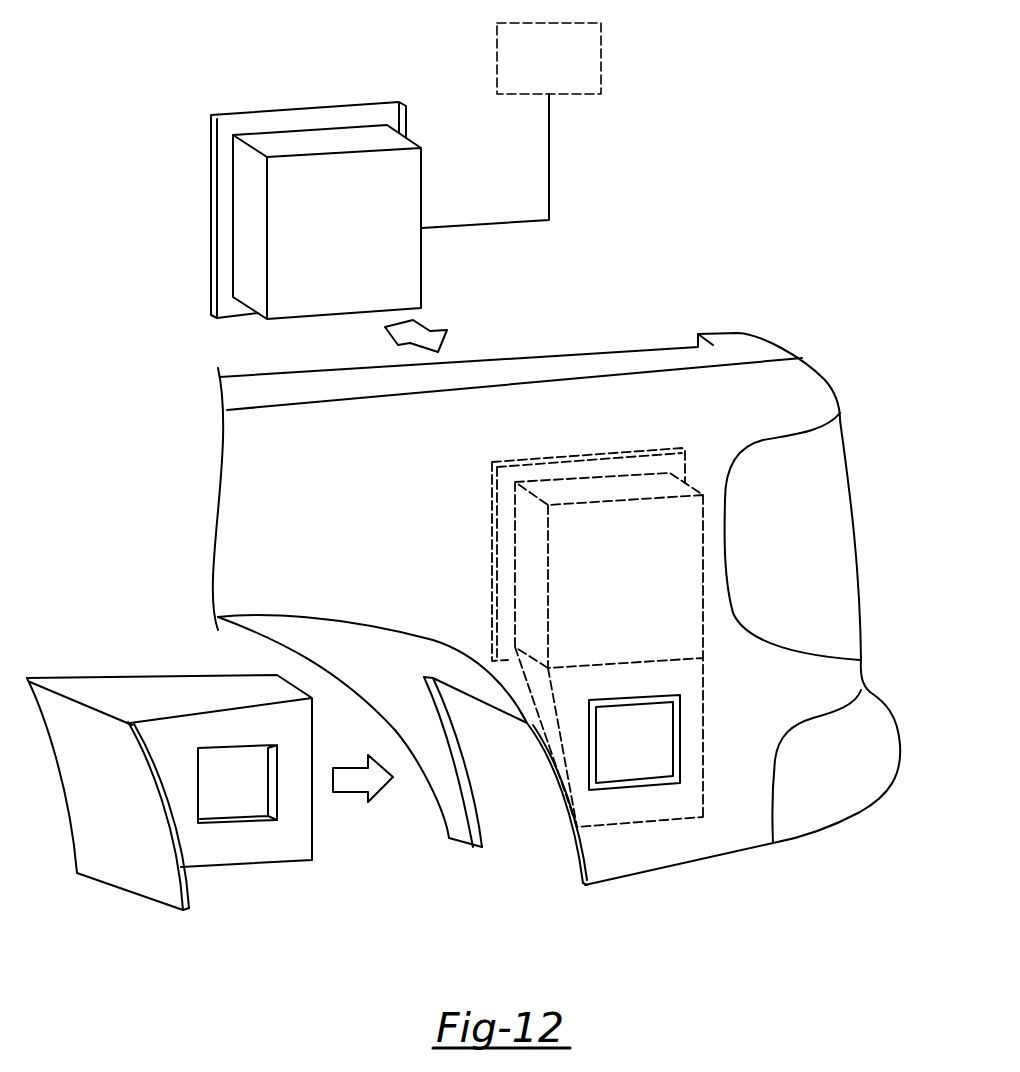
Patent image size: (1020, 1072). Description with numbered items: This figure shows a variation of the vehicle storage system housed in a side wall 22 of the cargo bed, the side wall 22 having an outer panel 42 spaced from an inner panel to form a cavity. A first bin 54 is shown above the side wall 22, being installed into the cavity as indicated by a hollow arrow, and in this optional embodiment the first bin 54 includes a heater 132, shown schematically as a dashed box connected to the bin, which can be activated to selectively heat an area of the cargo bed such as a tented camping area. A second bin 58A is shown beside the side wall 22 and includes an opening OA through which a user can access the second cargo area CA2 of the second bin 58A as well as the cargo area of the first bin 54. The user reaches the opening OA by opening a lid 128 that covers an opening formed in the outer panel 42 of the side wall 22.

The side wall 22 is at (556, 591).
The outer panel 42 is at (670, 412).
The first bin 54 is at (303, 146).
The second bin 58A is at (169, 775).
The lid 128 is at (637, 753).
The heater 132 is at (536, 84).
The opening OA is at (243, 750).
The second cargo area CA2 is at (247, 800).